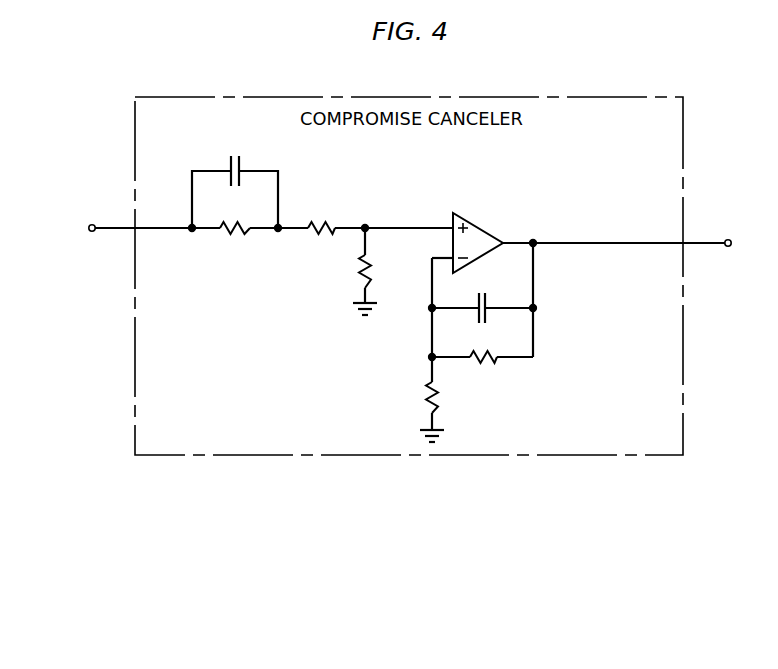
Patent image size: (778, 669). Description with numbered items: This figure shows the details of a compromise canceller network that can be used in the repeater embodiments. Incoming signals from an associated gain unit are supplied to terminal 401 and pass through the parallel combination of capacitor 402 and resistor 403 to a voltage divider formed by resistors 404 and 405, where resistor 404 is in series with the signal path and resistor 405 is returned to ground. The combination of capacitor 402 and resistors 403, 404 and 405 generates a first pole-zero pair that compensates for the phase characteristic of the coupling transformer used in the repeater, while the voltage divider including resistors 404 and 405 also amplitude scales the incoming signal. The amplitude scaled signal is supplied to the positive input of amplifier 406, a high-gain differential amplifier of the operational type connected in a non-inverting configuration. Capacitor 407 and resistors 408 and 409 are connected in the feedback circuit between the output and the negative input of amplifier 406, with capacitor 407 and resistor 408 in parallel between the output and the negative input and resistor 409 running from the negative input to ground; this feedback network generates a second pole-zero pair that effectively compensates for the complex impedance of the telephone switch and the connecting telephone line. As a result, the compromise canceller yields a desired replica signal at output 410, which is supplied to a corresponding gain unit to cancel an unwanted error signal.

The terminal 401 is at (88, 222).
The capacitor 402 is at (235, 153).
The resistor 403 is at (226, 238).
The resistor 404 is at (320, 218).
The resistor 405 is at (358, 268).
The amplifier 406 is at (478, 223).
The capacitor 407 is at (482, 299).
The resistor 408 is at (480, 348).
The resistor 409 is at (441, 395).
The output 410 is at (730, 238).